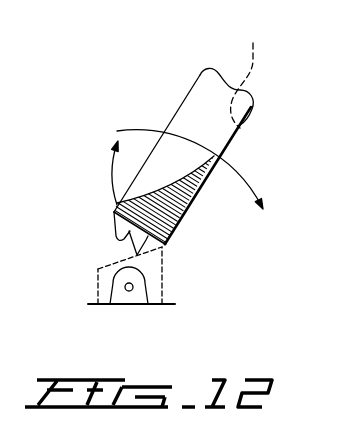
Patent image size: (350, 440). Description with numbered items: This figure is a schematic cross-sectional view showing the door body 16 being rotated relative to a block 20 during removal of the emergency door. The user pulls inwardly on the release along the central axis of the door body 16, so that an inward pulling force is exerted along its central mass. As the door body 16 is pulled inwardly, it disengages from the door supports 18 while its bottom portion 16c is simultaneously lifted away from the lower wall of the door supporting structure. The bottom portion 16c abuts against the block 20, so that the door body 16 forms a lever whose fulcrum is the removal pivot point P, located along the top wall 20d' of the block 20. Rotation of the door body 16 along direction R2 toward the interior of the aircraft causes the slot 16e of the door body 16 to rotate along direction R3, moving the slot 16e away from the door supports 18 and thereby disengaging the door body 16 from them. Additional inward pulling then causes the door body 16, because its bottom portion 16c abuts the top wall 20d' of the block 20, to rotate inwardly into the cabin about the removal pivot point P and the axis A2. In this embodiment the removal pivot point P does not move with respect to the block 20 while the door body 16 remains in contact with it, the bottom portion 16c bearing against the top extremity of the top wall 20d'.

The door body 16 is at (240, 121).
The axis A2 is at (249, 70).
The direction R2 is at (237, 177).
The direction R3 is at (113, 171).
The bottom portion 16c is at (106, 218).
The slot 16e is at (106, 253).
The block 20 is at (104, 284).
The top wall 20d' is at (186, 249).
The removal pivot point P is at (172, 256).
The door supports 18 is at (134, 320).